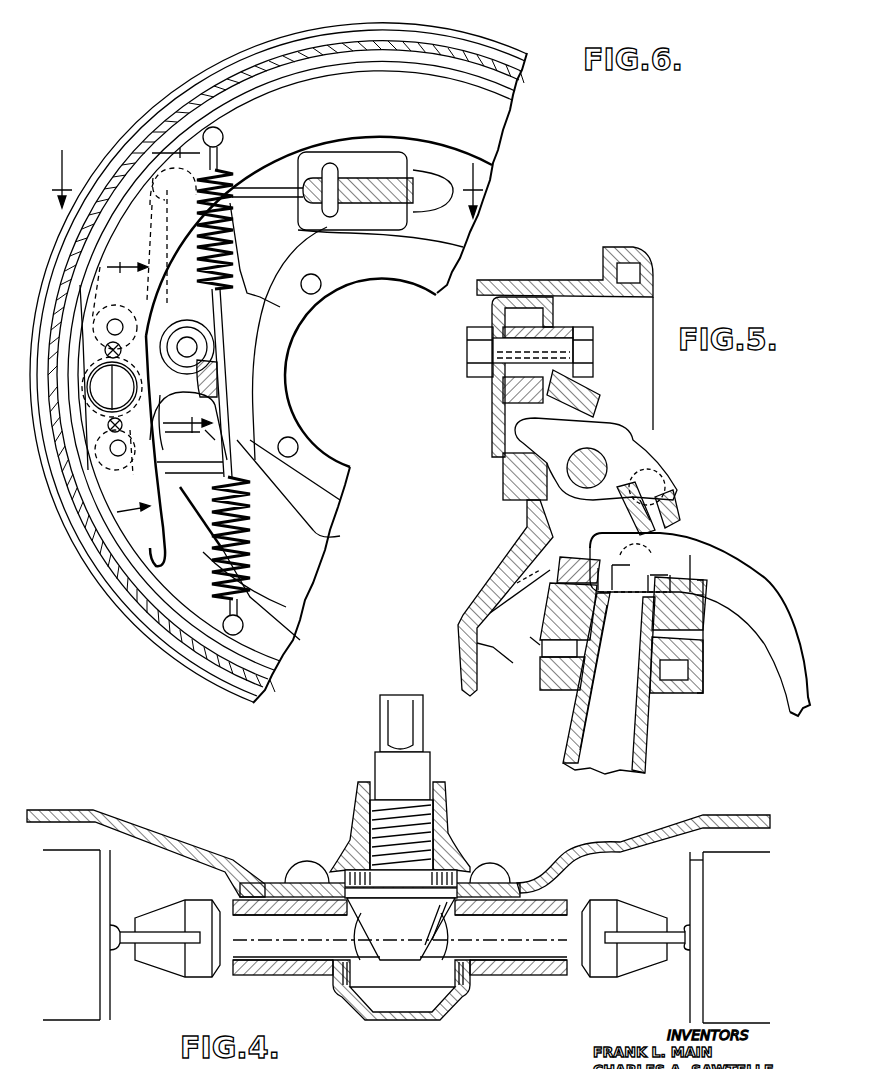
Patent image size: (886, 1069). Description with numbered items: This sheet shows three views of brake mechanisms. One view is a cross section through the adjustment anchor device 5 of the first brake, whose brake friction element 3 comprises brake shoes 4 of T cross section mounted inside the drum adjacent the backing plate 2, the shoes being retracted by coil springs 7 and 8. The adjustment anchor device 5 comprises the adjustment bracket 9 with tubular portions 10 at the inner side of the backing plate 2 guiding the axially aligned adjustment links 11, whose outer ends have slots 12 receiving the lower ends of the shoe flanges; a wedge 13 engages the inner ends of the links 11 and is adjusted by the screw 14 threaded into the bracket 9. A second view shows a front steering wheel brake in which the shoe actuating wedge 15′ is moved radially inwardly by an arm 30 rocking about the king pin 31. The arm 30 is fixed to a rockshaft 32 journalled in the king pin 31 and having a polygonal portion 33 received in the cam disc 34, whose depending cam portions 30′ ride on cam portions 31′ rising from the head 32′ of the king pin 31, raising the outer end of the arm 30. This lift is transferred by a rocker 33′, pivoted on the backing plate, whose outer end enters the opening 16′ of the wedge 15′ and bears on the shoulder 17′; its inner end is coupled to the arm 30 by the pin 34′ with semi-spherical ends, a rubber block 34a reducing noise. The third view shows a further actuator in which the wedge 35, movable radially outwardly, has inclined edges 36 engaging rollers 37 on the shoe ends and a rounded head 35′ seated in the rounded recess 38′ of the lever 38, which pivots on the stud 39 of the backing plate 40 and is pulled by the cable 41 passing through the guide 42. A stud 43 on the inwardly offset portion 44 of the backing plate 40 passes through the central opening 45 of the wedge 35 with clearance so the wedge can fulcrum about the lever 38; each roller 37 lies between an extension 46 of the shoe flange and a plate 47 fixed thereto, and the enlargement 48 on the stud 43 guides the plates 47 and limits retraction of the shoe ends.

In FIG. 4, the backing plate 2 is at (580, 850).
In FIG. 4, the brake friction element 3 is at (687, 867).
In FIG. 4, the brake shoes 4 is at (65, 860).
In FIG. 4, the adjustment anchor device 5 is at (450, 837).
In FIG. 6, the coil spring 7 is at (128, 390).
In FIG. 6, the coil spring 8 is at (182, 298).
In FIG. 6, the adjustment bracket 9 is at (267, 184).
In FIG. 4, the adjustment bracket 9 is at (353, 847).
In FIG. 4, the tubular portions 10 is at (257, 970).
In FIG. 4, the adjustment links 11 is at (283, 940).
In FIG. 4, the slots 12 is at (173, 937).
In FIG. 4, the wedge 13 is at (463, 880).
In FIG. 4, the screw 14 is at (430, 827).
In FIG. 5, the shoe actuating wedge 15′ is at (520, 473).
In FIG. 5, the opening 16′ is at (503, 433).
In FIG. 5, the shoulder 17′ is at (507, 457).
In FIG. 5, the arm 30 is at (745, 582).
In FIG. 5, the cam portions 30′ is at (703, 625).
In FIG. 5, the king pin 31 is at (648, 733).
In FIG. 5, the cam portions 31′ is at (550, 597).
In FIG. 5, the rockshaft 32 is at (600, 682).
In FIG. 5, the head 32′ is at (703, 655).
In FIG. 5, the polygonal portion 33 is at (630, 578).
In FIG. 5, the rocker 33′ is at (617, 453).
In FIG. 5, the cam disc 34 is at (685, 580).
In FIG. 5, the pin 34′ is at (667, 493).
In FIG. 5, the rubber block 34a is at (667, 503).
In FIG. 6, the wedge 35 is at (182, 417).
In FIG. 6, the rounded head 35′ is at (213, 420).
In FIG. 6, the inclined edges 36 is at (135, 308).
In FIG. 6, the rollers 37 is at (117, 319).
In FIG. 6, the lever 38 is at (185, 263).
In FIG. 6, the rounded recess 38′ is at (217, 387).
In FIG. 6, the stud 39 is at (187, 347).
In FIG. 6, the backing plate 40 is at (277, 257).
In FIG. 6, the cable 41 is at (268, 190).
In FIG. 6, the guide 42 is at (357, 180).
In FIG. 6, the stud 43 is at (103, 390).
In FIG. 6, the inwardly offset portion 44 is at (172, 447).
In FIG. 6, the central opening 45 is at (173, 400).
In FIG. 6, the extension 46 is at (93, 345).
In FIG. 6, the plate 47 is at (98, 472).
In FIG. 6, the enlargement 48 is at (97, 375).